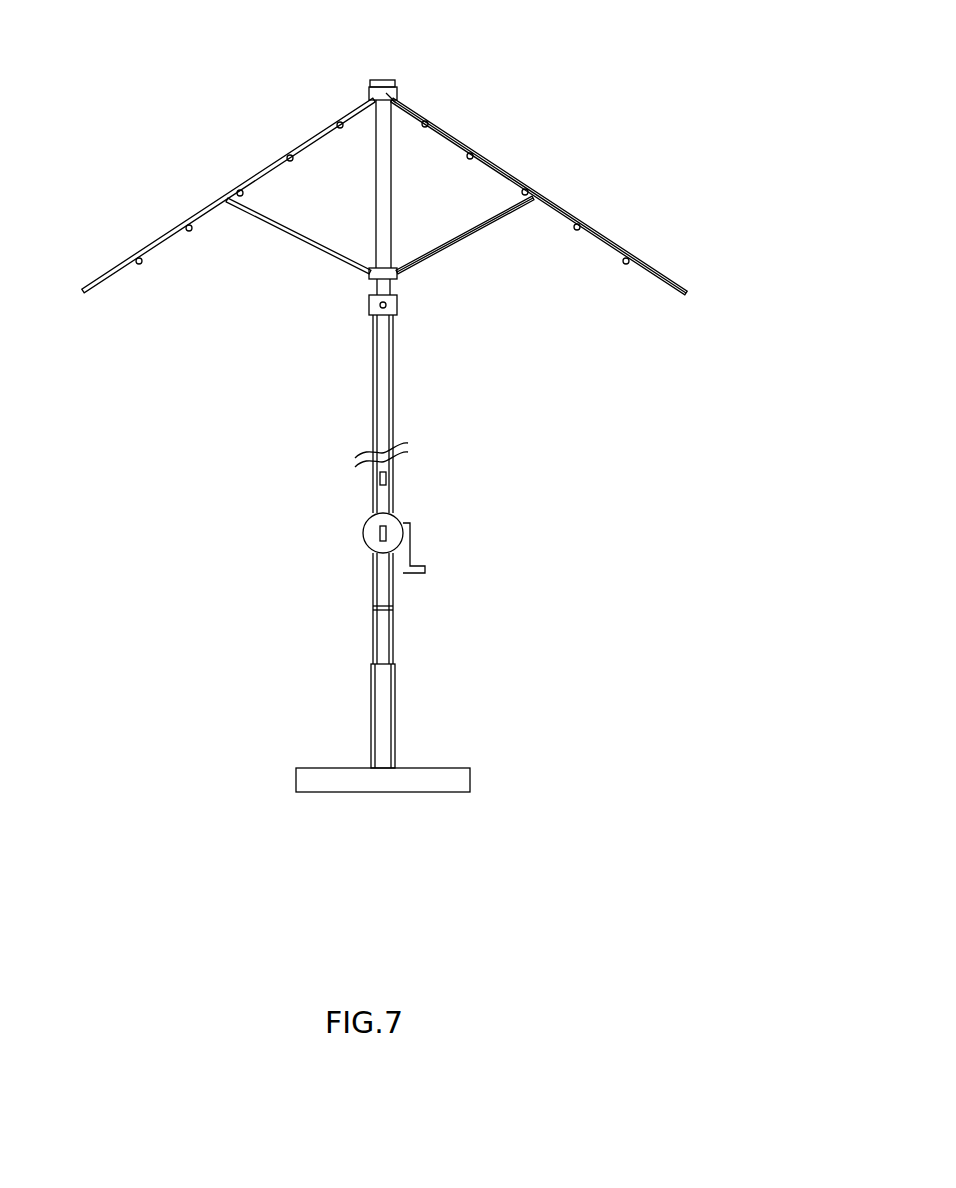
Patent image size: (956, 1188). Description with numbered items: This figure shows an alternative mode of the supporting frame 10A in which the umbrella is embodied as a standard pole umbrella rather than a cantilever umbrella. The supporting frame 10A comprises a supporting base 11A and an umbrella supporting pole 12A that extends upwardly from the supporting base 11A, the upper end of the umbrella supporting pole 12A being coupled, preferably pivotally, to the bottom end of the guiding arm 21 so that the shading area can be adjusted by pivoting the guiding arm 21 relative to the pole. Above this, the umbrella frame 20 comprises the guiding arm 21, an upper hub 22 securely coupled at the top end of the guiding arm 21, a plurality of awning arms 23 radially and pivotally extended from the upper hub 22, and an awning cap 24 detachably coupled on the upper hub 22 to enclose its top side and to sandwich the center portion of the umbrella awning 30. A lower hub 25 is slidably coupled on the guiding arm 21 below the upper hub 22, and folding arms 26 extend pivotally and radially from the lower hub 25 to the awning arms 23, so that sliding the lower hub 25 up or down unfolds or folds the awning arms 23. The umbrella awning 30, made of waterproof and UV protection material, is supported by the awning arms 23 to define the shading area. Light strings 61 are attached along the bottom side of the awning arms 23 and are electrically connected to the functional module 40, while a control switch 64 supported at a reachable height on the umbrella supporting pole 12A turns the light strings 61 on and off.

The supporting frame 10A is at (498, 553).
The supporting base 11A is at (451, 782).
The umbrella supporting pole 12A is at (380, 635).
The umbrella frame 20 is at (384, 217).
The guiding arm 21 is at (387, 213).
The upper hub 22 is at (415, 113).
The awning arms 23 is at (566, 213).
The awning cap 24 is at (397, 92).
The lower hub 25 is at (374, 315).
The folding arms 26 is at (312, 243).
The umbrella awning 30 is at (550, 198).
The functional module 40 is at (370, 82).
The light strings 61 is at (139, 264).
The control switch 64 is at (387, 478).